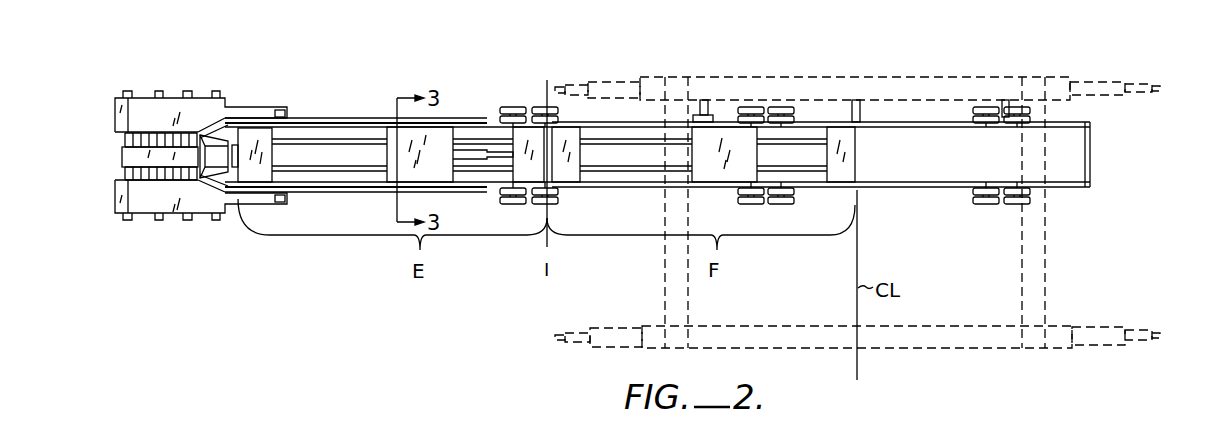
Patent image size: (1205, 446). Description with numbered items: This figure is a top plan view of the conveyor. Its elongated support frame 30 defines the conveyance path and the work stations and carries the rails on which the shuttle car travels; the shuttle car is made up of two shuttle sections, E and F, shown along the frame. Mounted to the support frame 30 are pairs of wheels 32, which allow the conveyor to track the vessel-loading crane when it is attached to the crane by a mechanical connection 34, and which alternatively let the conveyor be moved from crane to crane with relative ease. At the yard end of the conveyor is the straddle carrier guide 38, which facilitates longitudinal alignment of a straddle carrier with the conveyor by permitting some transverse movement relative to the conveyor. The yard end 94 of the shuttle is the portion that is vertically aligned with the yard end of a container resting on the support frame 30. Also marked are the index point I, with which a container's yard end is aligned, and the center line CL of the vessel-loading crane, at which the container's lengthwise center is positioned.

The support frame 30 is at (625, 122).
The wheels 32 is at (545, 107).
The mechanical connection 34 is at (708, 100).
The straddle carrier guide 38 is at (114, 196).
The yard end of the shuttle 94 is at (253, 137).